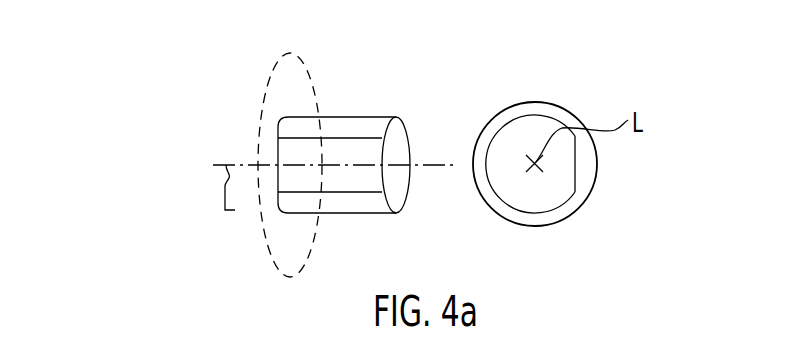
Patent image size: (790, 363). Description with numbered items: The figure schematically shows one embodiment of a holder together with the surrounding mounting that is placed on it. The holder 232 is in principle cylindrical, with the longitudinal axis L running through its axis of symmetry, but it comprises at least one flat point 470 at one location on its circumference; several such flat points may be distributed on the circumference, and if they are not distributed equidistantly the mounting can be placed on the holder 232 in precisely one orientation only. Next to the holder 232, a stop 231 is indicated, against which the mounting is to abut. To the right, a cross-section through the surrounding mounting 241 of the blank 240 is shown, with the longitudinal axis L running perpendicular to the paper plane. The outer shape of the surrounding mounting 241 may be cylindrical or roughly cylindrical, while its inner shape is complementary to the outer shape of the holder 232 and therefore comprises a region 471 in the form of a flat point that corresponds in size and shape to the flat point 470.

The stop 231 is at (292, 62).
The holder 232 is at (357, 116).
The flat point 470 is at (355, 178).
The blank 240 is at (582, 109).
The surrounding mounting 241 is at (539, 220).
The region in the form of a flat point 471 is at (578, 172).